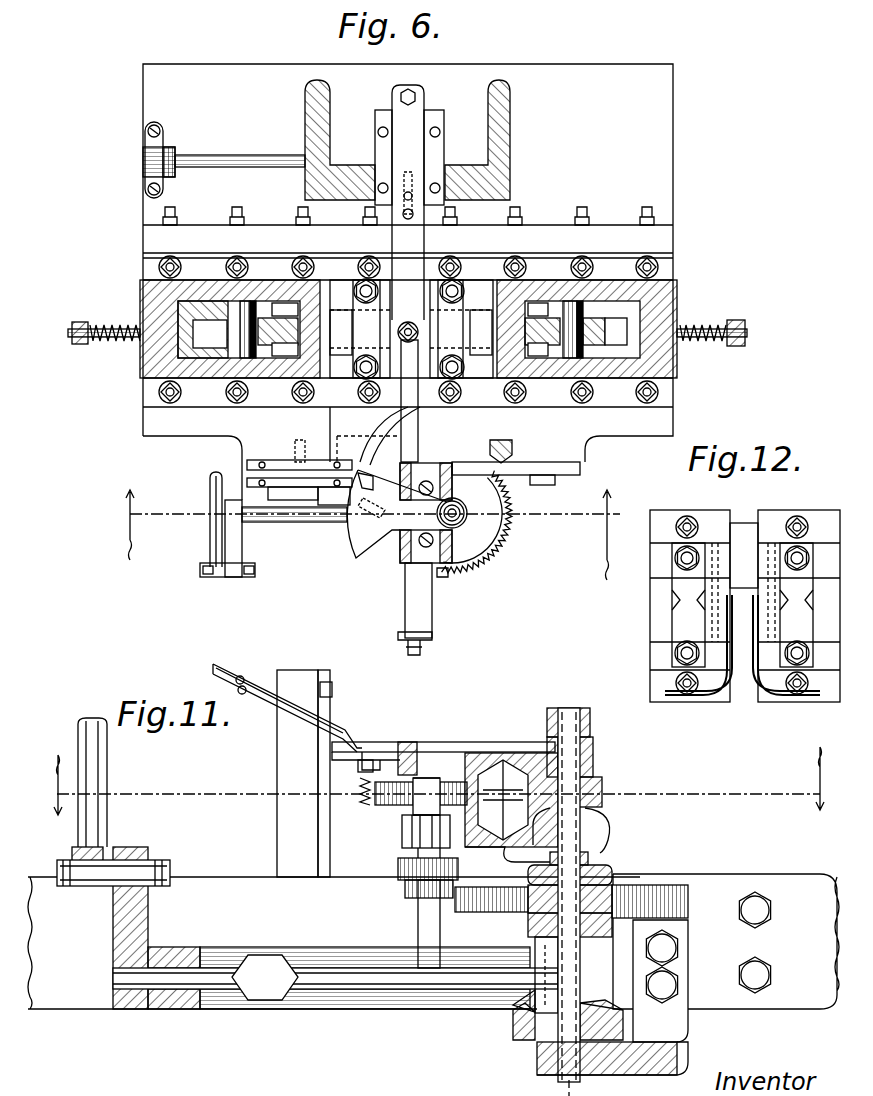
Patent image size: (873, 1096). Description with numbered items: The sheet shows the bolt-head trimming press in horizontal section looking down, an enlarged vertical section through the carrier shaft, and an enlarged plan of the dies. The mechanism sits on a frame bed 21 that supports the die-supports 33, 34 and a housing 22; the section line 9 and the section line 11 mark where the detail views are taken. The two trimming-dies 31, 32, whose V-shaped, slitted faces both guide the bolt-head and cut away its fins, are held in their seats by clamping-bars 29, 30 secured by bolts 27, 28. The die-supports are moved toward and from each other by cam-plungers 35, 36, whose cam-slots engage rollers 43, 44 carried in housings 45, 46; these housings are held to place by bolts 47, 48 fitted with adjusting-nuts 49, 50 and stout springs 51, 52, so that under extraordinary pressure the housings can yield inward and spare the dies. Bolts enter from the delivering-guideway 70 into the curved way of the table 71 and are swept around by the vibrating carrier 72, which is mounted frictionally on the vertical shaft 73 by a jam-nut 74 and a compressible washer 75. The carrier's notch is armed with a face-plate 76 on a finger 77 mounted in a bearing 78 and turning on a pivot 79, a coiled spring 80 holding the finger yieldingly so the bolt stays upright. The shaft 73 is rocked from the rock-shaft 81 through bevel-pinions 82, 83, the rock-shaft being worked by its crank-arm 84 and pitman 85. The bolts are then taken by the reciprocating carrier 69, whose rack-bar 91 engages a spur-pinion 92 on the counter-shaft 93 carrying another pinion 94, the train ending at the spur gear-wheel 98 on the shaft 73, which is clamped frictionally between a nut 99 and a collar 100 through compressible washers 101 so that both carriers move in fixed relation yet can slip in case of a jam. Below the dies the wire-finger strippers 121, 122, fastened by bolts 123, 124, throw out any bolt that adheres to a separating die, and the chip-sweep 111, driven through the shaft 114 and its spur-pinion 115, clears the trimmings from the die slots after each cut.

In FIG. 6, the bed 21 is at (160, 104).
In FIG. 11, the bed 21 is at (78, 975).
In FIG. 6, the housing 22 is at (322, 106).
In FIG. 11, the housing 22 is at (305, 822).
In FIG. 6, the bolt 27 is at (468, 280).
In FIG. 12, the bolt 27 is at (800, 558).
In FIG. 12, the bolt 28 is at (683, 559).
In FIG. 6, the clamping-bar 29 is at (472, 335).
In FIG. 12, the clamping-bar 29 is at (790, 605).
In FIG. 12, the clamping-bar 30 is at (695, 605).
In FIG. 6, the trimming-die 31 is at (470, 320).
In FIG. 12, the trimming-die 31 is at (770, 592).
In FIG. 6, the trimming-die 32 is at (352, 335).
In FIG. 12, the trimming-die 32 is at (665, 626).
In FIG. 6, the die-support 33 is at (555, 378).
In FIG. 6, the die-support 34 is at (145, 282).
In FIG. 6, the cam-plunger 35 is at (594, 335).
In FIG. 6, the cam-plunger 36 is at (227, 337).
In FIG. 6, the roller 43 is at (566, 318).
In FIG. 6, the roller 44 is at (240, 310).
In FIG. 6, the housing 45 is at (643, 353).
In FIG. 6, the housing 46 is at (160, 300).
In FIG. 6, the bolt 47 is at (750, 333).
In FIG. 6, the bolt 48 is at (70, 335).
In FIG. 6, the adjusting-nut 49 is at (742, 322).
In FIG. 6, the adjusting-nut 50 is at (80, 344).
In FIG. 6, the spring 51 is at (714, 318).
In FIG. 6, the spring 52 is at (114, 345).
In FIG. 6, the reciprocating carrier 69 is at (408, 390).
In FIG. 11, the reciprocating carrier 69 is at (502, 752).
In FIG. 6, the delivering-guideway 70 is at (287, 463).
In FIG. 11, the delivering-guideway 70 is at (272, 703).
In FIG. 6, the table 71 is at (368, 436).
In FIG. 6, the vibrating carrier 72 is at (360, 535).
In FIG. 11, the vibrating carrier 72 is at (462, 738).
In FIG. 6, the vertical shaft 73 is at (453, 527).
In FIG. 11, the vertical shaft 73 is at (572, 842).
In FIG. 11, the jam-nut 74 is at (592, 722).
In FIG. 11, the washer 75 is at (595, 745).
In FIG. 6, the face-plate 76 is at (366, 482).
In FIG. 6, the finger 77 is at (352, 490).
In FIG. 6, the bearing 78 is at (348, 525).
In FIG. 11, the bearing 78 is at (380, 762).
In FIG. 11, the pivot 79 is at (364, 805).
In FIG. 11, the coiled spring 80 is at (358, 786).
In FIG. 6, the rock-shaft 81 is at (290, 523).
In FIG. 11, the rock-shaft 81 is at (355, 985).
In FIG. 11, the bevel-pinion 82 is at (508, 1012).
In FIG. 11, the bevel-pinion 83 is at (545, 1024).
In FIG. 6, the crank-arm 84 is at (240, 576).
In FIG. 11, the crank-arm 84 is at (140, 923).
In FIG. 6, the pitman 85 is at (210, 500).
In FIG. 11, the pitman 85 is at (107, 770).
In FIG. 11, the rack-bar 91 is at (507, 862).
In FIG. 11, the spur-pinion 92 is at (396, 808).
In FIG. 11, the counter-shaft 93 is at (428, 897).
In FIG. 11, the pinion 94 is at (405, 880).
In FIG. 6, the spur gear-wheel 98 is at (493, 530).
In FIG. 11, the spur gear-wheel 98 is at (690, 885).
In FIG. 11, the nut 99 is at (603, 870).
In FIG. 11, the collar 100 is at (600, 940).
In FIG. 11, the compressible washers 101 is at (614, 888).
In FIG. 6, the chip-sweep 111 is at (400, 238).
In FIG. 6, the shaft 114 is at (258, 156).
In FIG. 6, the spur-pinion 115 is at (178, 153).
In FIG. 12, the stripper 121 is at (758, 665).
In FIG. 12, the stripper 122 is at (732, 665).
In FIG. 12, the bolt 123 is at (797, 695).
In FIG. 12, the bolt 124 is at (687, 690).
In FIG. 11, the dotted line 9 9 is at (436, 781).
In FIG. 6, the dotted line 11 11 is at (367, 535).